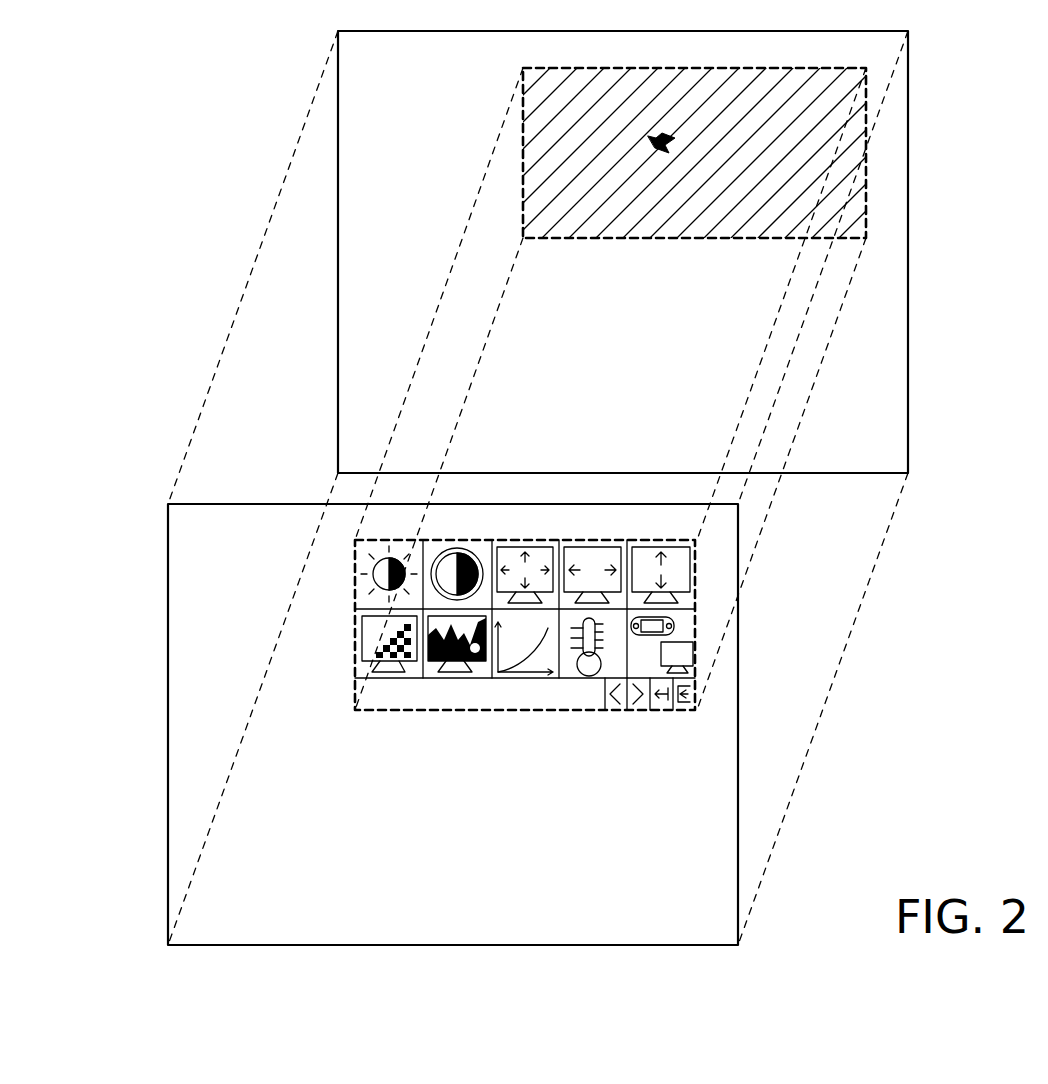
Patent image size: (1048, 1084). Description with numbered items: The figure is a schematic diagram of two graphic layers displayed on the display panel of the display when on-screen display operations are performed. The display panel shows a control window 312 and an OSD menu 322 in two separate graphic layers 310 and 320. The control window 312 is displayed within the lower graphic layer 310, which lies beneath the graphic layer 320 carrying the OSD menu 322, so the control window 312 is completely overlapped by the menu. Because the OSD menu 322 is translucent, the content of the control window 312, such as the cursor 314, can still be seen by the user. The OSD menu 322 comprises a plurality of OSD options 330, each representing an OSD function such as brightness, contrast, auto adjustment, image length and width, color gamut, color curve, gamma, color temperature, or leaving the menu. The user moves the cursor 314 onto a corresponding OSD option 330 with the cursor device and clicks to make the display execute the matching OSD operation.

The graphic layer 310 is at (908, 382).
The control window 312 is at (866, 197).
The cursor 314 is at (660, 142).
The graphic layer 320 is at (738, 818).
The OSD menu 322 is at (381, 712).
The OSD options 330 is at (473, 550).